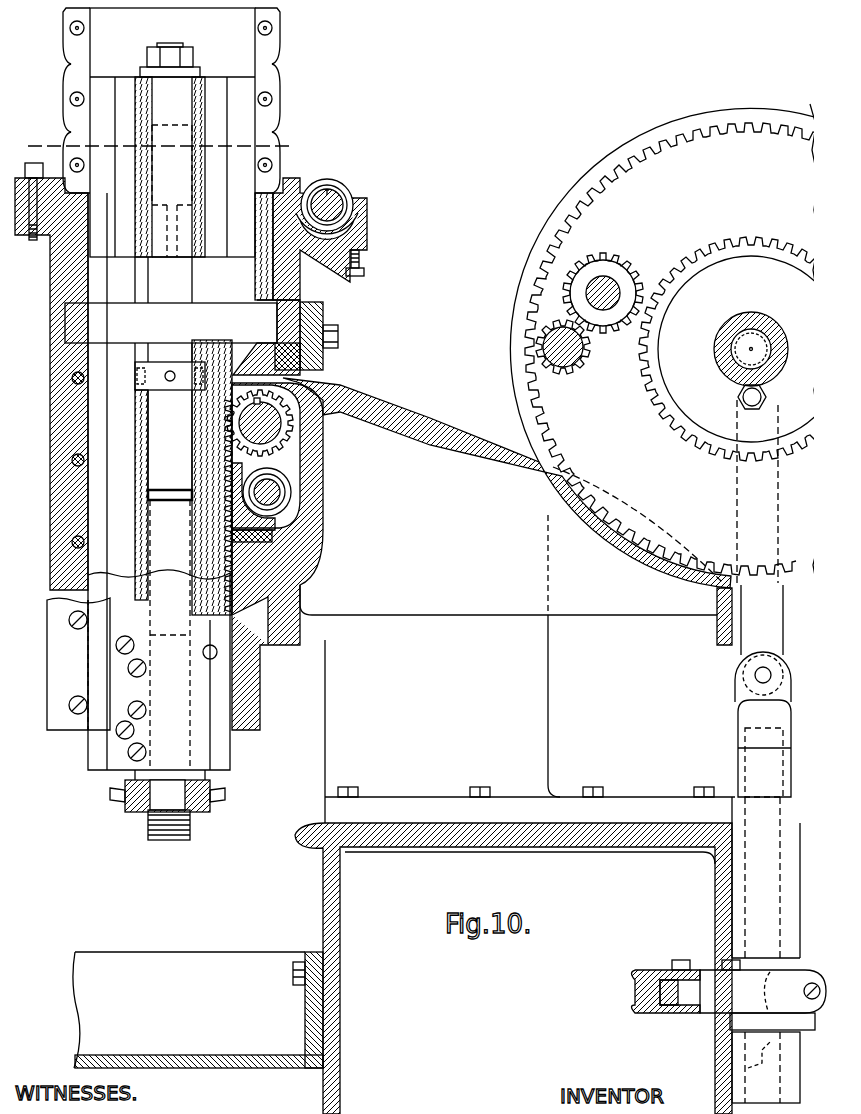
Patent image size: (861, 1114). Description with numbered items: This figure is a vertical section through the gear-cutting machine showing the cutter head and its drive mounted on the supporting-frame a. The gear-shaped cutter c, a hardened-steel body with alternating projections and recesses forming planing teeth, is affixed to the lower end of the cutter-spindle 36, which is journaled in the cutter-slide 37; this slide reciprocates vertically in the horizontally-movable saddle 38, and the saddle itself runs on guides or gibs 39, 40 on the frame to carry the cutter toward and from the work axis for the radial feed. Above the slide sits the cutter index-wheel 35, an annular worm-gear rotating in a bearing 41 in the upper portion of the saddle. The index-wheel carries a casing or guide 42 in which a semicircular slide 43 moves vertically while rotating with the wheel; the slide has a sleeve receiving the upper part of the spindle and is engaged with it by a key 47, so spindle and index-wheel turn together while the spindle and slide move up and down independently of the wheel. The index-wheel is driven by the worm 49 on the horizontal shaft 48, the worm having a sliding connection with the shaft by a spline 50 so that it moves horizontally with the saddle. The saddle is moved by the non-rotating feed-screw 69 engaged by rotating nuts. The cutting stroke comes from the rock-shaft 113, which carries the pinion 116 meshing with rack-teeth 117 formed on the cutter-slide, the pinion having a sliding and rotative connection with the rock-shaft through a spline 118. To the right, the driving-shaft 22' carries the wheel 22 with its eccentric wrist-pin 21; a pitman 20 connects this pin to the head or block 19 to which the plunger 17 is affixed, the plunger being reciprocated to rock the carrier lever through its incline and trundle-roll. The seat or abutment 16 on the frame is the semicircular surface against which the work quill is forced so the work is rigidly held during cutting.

The seat or abutment 16 is at (160, 145).
The plunger 17 is at (771, 816).
The head or block 19 is at (785, 722).
The pitman 20 is at (779, 608).
The eccentric wrist-pin 21 is at (763, 395).
The wheel 22 is at (685, 345).
The driving-shaft 22' is at (763, 346).
The cutter index-wheel 35 is at (292, 207).
The cutter-spindle 36 is at (185, 286).
The cutter-slide 37 is at (140, 495).
The saddle 38 is at (52, 451).
The guide or gib 39 is at (262, 682).
The guide or gib 40 is at (324, 360).
The bearing 41 is at (276, 254).
The casing or guide 42 is at (75, 128).
The semicircular slide 43 is at (105, 85).
The key 47 is at (150, 270).
The horizontal shaft 48 is at (340, 212).
The worm 49 is at (350, 195).
The spline 50 is at (331, 182).
The feed-screw 69 is at (300, 501).
The rock-shaft 113 is at (330, 400).
The pinion 116 is at (290, 437).
The rack-teeth 117 is at (250, 547).
The spline 118 is at (252, 403).
The supporting-frame a is at (612, 848).
The gear-shaped cutter c is at (110, 800).